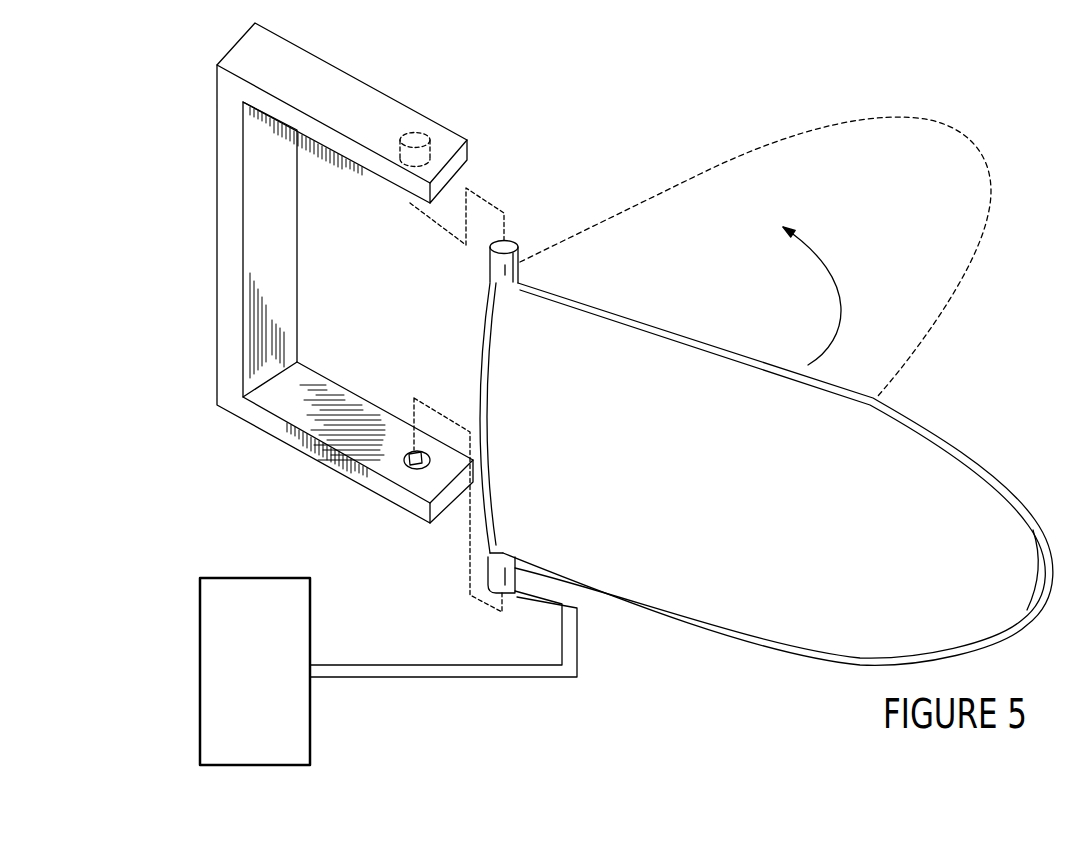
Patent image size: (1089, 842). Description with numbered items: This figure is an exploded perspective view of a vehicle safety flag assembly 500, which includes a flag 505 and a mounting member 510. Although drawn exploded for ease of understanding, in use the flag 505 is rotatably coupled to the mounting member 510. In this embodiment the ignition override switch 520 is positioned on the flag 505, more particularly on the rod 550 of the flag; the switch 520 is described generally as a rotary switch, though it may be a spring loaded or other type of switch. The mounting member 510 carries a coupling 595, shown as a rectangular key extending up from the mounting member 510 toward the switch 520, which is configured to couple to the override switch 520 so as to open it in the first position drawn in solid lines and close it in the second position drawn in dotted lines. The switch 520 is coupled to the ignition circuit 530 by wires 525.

The vehicle safety flag assembly 500 is at (593, 693).
The flag 505 is at (943, 447).
The mounting member 510 is at (306, 60).
The ignition override switch 520 is at (517, 592).
The wires 525 is at (364, 680).
The ignition circuit 530 is at (258, 578).
The rod 550 is at (518, 273).
The coupling 595 is at (407, 457).